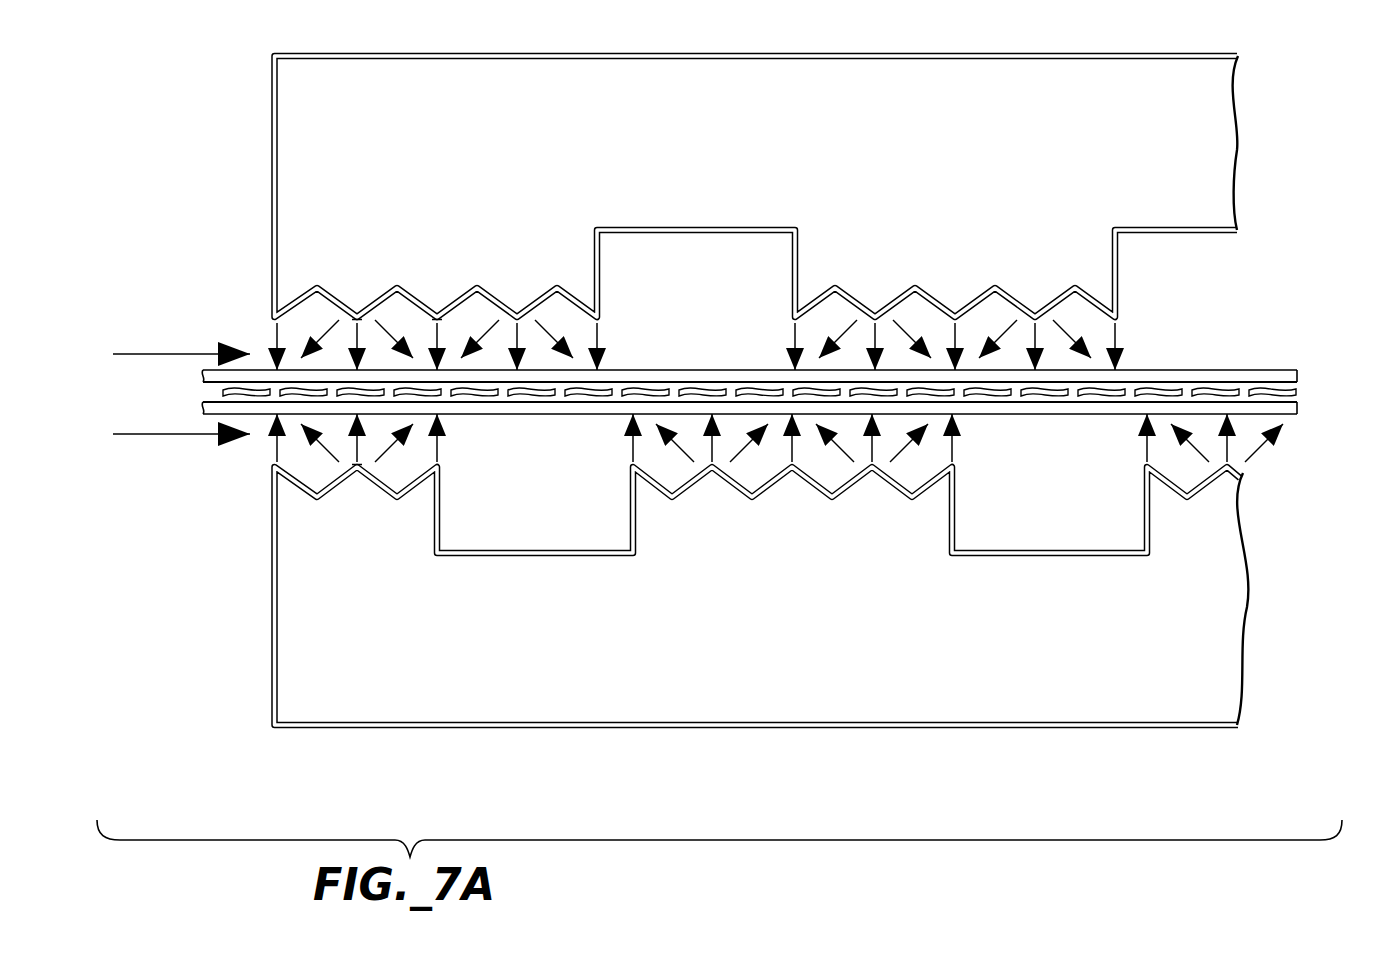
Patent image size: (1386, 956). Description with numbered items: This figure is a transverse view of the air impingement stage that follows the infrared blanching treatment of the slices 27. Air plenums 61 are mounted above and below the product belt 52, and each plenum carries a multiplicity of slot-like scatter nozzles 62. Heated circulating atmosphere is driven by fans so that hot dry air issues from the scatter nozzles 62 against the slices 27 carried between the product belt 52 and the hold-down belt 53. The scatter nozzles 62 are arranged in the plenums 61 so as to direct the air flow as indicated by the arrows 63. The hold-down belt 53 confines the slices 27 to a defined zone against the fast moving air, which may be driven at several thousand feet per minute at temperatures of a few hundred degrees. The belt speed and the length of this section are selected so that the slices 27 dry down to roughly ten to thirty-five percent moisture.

The air plenum 61 is at (352, 80).
The scatter nozzle 62 is at (437, 317).
The arrow 63 is at (1117, 338).
The hold-down belt 53 is at (1297, 372).
The product belt 52 is at (1297, 410).
The slice 27 is at (220, 393).